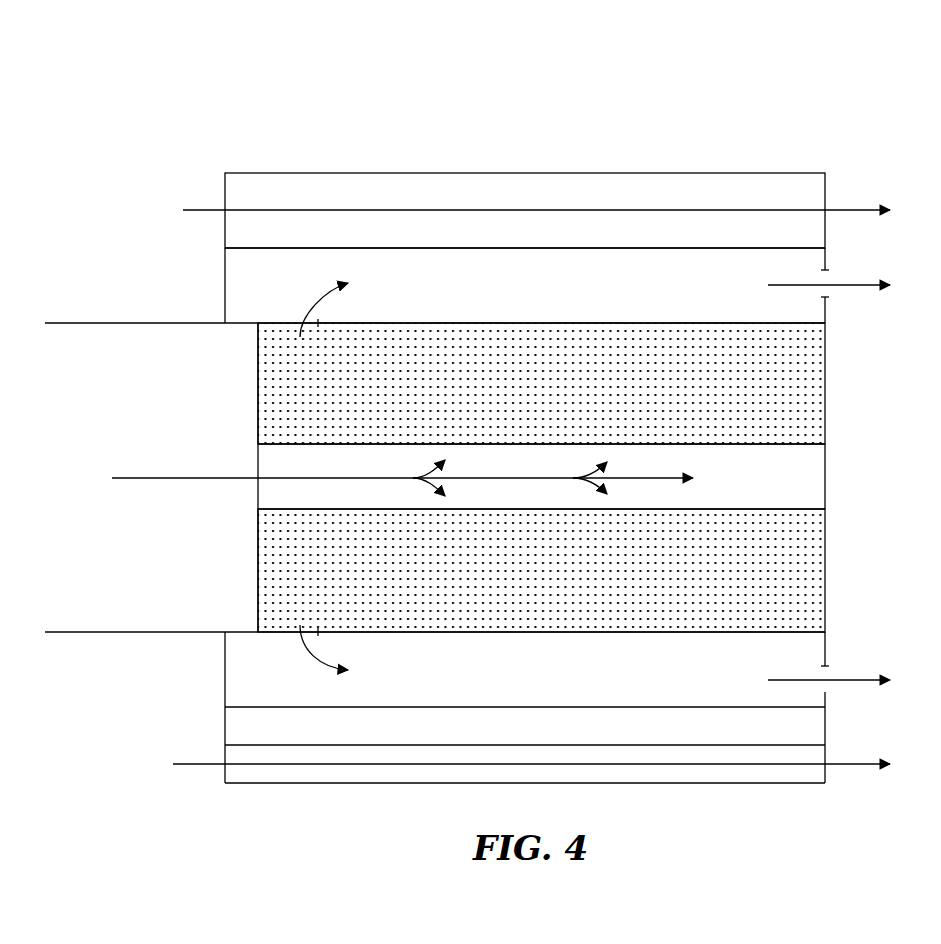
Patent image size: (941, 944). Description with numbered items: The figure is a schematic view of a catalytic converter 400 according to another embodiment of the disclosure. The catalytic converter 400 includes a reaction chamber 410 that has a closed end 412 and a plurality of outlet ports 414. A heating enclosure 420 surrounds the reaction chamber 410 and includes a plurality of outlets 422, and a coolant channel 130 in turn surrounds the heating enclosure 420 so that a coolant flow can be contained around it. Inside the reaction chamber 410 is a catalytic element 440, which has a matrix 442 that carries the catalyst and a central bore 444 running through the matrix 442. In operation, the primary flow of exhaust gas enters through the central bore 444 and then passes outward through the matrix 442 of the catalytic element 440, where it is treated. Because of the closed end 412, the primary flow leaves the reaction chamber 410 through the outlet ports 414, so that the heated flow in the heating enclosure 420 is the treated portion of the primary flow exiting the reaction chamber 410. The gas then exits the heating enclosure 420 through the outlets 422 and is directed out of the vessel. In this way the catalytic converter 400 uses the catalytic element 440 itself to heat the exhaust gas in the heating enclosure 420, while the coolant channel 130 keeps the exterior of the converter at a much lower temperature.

The catalytic converter 400 is at (805, 130).
The coolant channel 130 is at (233, 190).
The heating enclosure 420 is at (233, 257).
The outlets 422 is at (830, 268).
The reaction chamber 410 is at (203, 360).
The closed end 412 is at (825, 480).
The outlet ports 414 is at (293, 333).
The catalytic element 440 is at (258, 391).
The matrix 442 is at (275, 428).
The central bore 444 is at (268, 500).